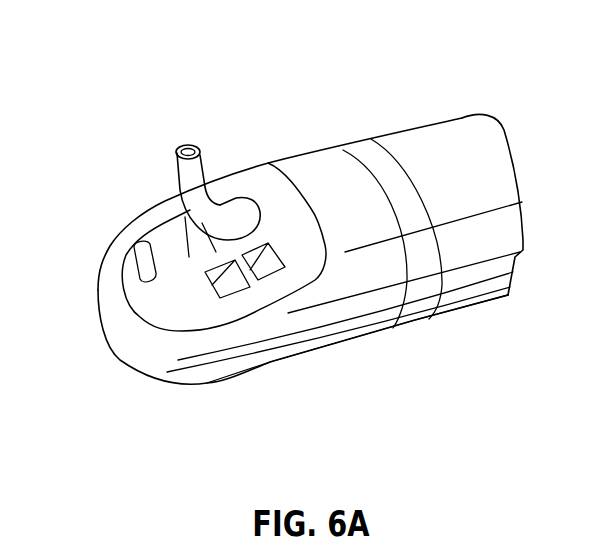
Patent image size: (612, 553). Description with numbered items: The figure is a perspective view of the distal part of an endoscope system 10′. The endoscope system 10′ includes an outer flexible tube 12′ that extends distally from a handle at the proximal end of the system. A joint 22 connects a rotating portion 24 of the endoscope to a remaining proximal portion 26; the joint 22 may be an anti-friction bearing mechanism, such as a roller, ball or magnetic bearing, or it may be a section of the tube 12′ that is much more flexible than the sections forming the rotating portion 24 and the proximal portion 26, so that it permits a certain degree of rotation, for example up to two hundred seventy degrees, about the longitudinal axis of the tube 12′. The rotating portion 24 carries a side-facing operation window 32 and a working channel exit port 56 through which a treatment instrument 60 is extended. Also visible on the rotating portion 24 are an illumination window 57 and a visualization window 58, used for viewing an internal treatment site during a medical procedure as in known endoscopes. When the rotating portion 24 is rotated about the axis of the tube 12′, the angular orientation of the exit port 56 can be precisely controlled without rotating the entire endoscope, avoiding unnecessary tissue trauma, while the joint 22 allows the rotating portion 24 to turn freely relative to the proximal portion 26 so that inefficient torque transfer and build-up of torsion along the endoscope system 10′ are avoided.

The endoscope system 10′ is at (233, 102).
The outer flexible tube 12′ is at (447, 138).
The joint 22 is at (410, 315).
The rotating portion 24 is at (313, 345).
The proximal portion 26 is at (478, 147).
The operation window 32 is at (153, 318).
The working channel exit port 56 is at (147, 246).
The illumination window 57 is at (232, 289).
The visualization window 58 is at (281, 266).
The treatment instrument 60 is at (196, 173).